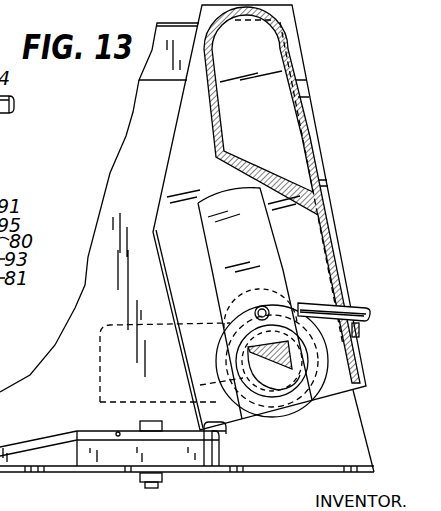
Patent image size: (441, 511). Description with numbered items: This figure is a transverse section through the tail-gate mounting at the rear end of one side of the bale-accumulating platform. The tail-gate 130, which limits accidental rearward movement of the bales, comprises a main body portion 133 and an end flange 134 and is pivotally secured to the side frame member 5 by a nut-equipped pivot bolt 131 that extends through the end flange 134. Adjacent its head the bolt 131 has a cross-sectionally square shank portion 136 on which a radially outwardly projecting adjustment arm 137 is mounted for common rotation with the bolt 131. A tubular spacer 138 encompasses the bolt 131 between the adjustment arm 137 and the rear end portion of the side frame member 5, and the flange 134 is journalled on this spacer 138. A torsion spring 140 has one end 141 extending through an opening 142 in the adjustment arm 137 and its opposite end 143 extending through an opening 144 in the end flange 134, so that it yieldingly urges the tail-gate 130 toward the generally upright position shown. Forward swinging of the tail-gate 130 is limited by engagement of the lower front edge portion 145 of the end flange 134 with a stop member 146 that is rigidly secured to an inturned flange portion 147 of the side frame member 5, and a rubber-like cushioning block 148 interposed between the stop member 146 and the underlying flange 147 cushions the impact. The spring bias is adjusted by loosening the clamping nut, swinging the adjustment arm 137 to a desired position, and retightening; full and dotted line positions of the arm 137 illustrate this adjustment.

The side frame member 5 is at (128, 155).
The tail-gate 130 is at (314, 137).
The pivot bolt 131 is at (278, 386).
The main body portion 133 is at (306, 96).
The end flange 134 is at (184, 168).
The square shank portion 136 is at (286, 350).
The adjustment arm 137 is at (252, 245).
The tubular spacer 138 is at (312, 396).
The torsion spring 140 is at (355, 378).
The spring end 141 is at (256, 308).
The opening in adjustment arm 142 is at (266, 306).
The opposite spring end 143 is at (356, 305).
The opening in end flange 144 is at (362, 328).
The lower front edge portion 145 is at (226, 426).
The stop member 146 is at (117, 432).
The inturned flange portion 147 is at (32, 490).
The cushioning block 148 is at (128, 455).